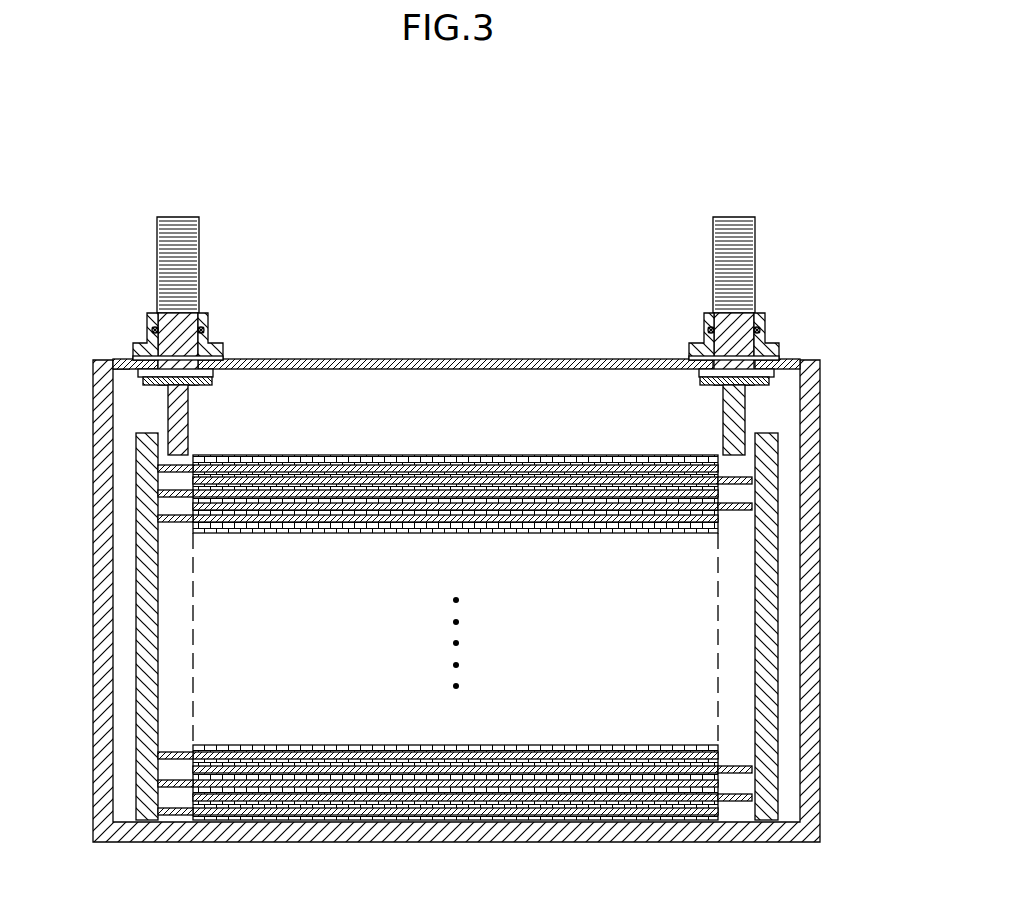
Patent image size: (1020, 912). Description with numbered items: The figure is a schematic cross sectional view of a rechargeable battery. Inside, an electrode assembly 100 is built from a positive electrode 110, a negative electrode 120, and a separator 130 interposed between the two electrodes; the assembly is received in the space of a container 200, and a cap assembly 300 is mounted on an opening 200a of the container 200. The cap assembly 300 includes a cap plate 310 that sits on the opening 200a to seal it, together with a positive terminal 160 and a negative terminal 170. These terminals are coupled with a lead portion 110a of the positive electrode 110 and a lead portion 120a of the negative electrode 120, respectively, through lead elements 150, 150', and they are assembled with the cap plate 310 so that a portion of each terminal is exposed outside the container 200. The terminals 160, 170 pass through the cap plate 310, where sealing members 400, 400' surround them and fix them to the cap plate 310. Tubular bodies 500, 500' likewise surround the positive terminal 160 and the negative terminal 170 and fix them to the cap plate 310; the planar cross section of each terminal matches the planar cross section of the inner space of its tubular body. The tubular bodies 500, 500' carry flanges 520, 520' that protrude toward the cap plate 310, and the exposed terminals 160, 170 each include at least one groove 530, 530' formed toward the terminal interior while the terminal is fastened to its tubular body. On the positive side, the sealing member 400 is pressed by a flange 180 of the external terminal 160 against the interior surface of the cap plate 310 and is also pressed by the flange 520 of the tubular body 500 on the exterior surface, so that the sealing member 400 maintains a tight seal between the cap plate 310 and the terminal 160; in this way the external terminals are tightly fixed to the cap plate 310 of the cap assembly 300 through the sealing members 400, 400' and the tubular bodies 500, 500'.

The electrode assembly 100 is at (460, 676).
The positive electrode 110 is at (278, 810).
The lead portion of the positive electrode 110a is at (178, 815).
The negative electrode 120 is at (637, 800).
The lead portion of the negative electrode 120a is at (735, 800).
The separator 130 is at (410, 785).
The lead element 150 is at (90, 626).
The lead element 150' is at (825, 626).
The positive terminal 160 is at (176, 232).
The negative terminal 170 is at (732, 228).
The flange of the external terminal 180 is at (210, 386).
The container 200 is at (810, 700).
The opening 200a is at (128, 372).
The cap assembly 300 is at (456, 341).
The cap plate 310 is at (400, 370).
The sealing member 400 is at (133, 344).
The sealing member 400' is at (784, 344).
The tubular body 500 is at (222, 337).
The tubular body 500' is at (688, 343).
The flange of the tubular body 520 is at (150, 325).
The flange of the tubular body 520' is at (768, 325).
The groove 530 is at (202, 297).
The groove 530' is at (710, 298).